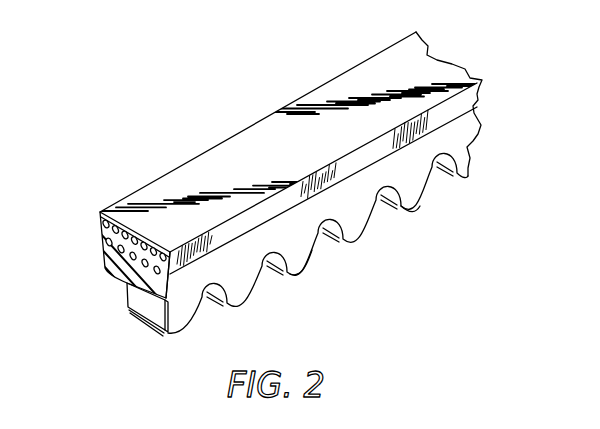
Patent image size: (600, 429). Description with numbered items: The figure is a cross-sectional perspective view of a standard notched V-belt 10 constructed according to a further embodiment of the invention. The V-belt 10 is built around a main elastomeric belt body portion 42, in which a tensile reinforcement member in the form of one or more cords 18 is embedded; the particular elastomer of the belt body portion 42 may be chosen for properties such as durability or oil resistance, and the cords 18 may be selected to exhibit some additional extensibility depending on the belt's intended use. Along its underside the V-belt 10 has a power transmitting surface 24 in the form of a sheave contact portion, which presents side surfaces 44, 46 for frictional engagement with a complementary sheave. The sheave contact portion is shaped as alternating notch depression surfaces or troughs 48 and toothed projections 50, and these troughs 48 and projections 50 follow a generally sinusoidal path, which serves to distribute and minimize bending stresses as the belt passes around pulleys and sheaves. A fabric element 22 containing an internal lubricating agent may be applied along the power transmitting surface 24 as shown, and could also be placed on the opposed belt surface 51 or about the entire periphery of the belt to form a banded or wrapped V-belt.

The V-belt 10 is at (185, 146).
The cords 18 is at (106, 254).
The fabric element 22 is at (467, 159).
The power transmitting surface 24 is at (122, 283).
The main elastomeric belt body portion 42 is at (118, 269).
The side surface 44 is at (300, 252).
The side surface 46 is at (127, 307).
The notch depression surfaces 48 is at (389, 207).
The toothed projections 50 is at (418, 203).
The belt surface 51 is at (428, 72).